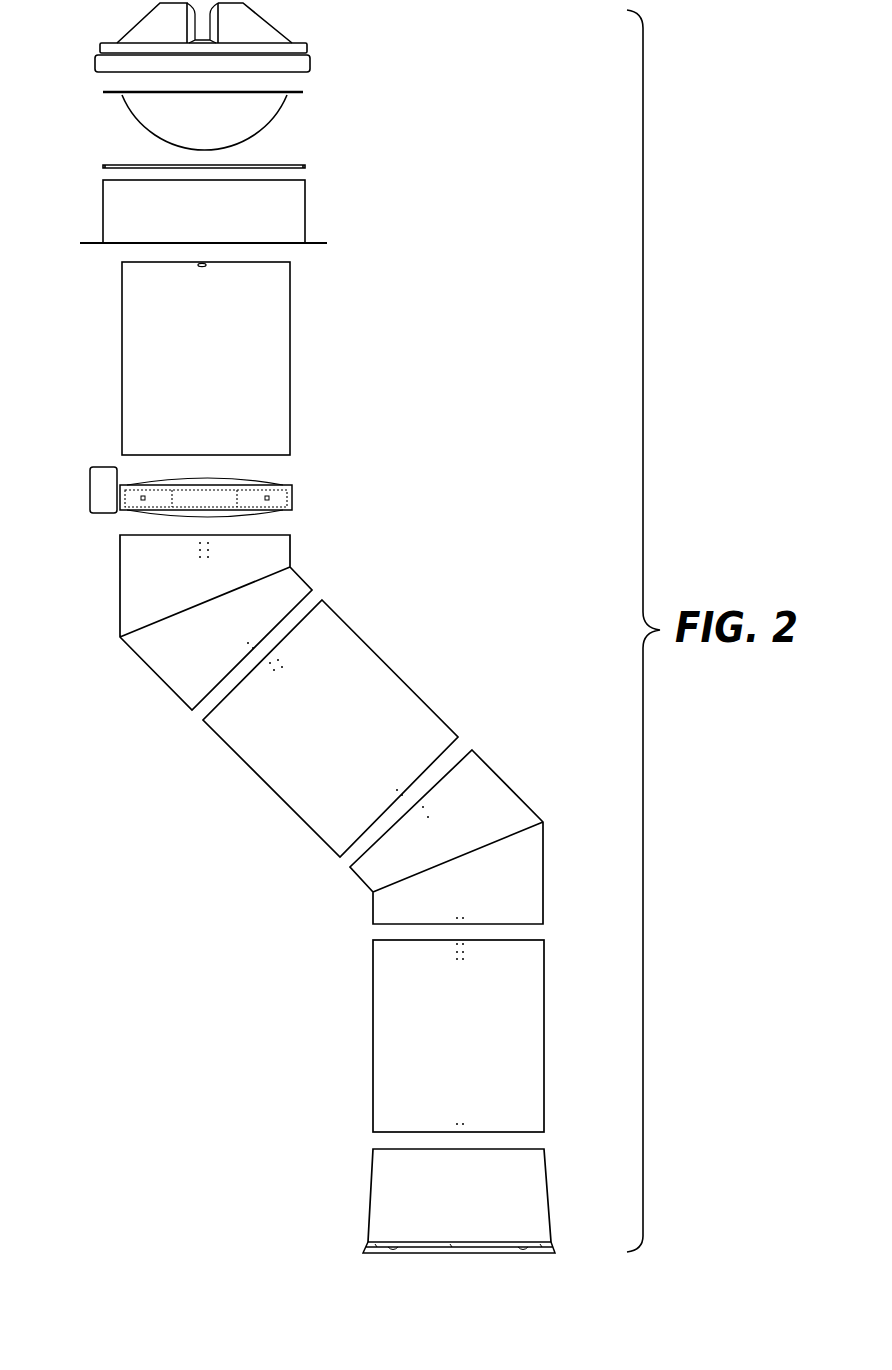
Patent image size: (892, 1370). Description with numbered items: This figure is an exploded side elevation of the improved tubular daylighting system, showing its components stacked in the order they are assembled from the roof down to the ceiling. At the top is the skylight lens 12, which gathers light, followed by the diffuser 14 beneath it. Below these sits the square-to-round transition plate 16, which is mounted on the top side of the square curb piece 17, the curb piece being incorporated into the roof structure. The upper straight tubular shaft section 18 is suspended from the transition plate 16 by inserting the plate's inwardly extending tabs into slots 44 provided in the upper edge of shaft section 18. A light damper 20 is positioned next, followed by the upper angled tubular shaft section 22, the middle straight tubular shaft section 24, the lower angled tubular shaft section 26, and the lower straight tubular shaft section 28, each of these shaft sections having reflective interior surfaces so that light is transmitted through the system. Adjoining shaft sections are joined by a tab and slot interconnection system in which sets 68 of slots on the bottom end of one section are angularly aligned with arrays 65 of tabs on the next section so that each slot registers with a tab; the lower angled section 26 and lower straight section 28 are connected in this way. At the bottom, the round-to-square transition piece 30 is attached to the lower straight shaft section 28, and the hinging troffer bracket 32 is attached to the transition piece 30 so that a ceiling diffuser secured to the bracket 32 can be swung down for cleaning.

The skylight lens 12 is at (273, 34).
The diffuser 14 is at (283, 100).
The square-to-round transition plate 16 is at (305, 167).
The square curb piece 17 is at (305, 200).
The upper straight tubular shaft section 18 is at (290, 398).
The slots 44 is at (204, 267).
The light damper 20 is at (292, 493).
The upper angled tubular shaft section 22 is at (300, 573).
The middle straight tubular shaft section 24 is at (370, 643).
The lower angled tubular shaft section 26 is at (507, 780).
The lower straight tubular shaft section 28 is at (545, 1017).
The round-to-square transition piece 30 is at (547, 1182).
The hinging troffer bracket 32 is at (535, 1253).
The sets of slots 68 is at (244, 637).
The arrays of tabs 65 is at (271, 676).